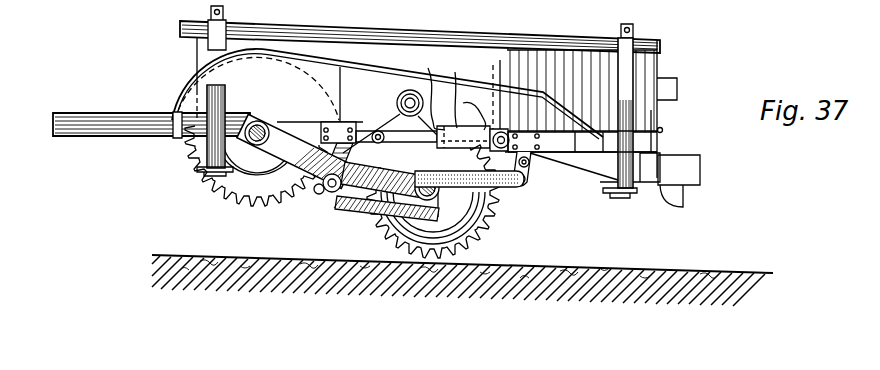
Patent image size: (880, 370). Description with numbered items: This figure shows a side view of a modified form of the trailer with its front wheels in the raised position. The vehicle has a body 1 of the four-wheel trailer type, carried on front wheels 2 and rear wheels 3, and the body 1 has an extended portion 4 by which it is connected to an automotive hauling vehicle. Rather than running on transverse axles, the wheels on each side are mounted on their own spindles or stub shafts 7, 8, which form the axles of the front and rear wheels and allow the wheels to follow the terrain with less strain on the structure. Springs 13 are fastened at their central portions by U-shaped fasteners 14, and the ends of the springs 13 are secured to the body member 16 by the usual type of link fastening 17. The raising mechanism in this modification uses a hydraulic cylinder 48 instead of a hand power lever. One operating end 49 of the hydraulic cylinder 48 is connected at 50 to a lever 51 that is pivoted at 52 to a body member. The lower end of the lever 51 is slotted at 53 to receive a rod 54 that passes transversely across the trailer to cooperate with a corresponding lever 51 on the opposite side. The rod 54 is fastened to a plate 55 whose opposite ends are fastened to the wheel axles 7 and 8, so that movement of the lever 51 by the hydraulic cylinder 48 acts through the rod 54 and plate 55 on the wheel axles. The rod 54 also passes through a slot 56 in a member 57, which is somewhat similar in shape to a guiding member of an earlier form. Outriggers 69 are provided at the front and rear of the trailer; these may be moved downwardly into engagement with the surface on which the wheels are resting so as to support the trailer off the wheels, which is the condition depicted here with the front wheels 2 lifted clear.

The body 1 is at (198, 62).
The front wheels 2 is at (190, 155).
The rear wheels 3 is at (500, 223).
The extended portion 4 is at (125, 118).
The spindle or stub shaft 7 is at (282, 124).
The spindle or stub shaft 8 is at (358, 216).
The spring 13 is at (528, 172).
The U-shaped fastener 14 is at (458, 138).
The body member 16 is at (303, 122).
The link fastening 17 is at (530, 178).
The hydraulic cylinder 48 is at (464, 92).
The operating end 49 is at (425, 92).
The connection 50 is at (318, 154).
The lever 51 is at (376, 114).
The pivot 52 is at (398, 100).
The slot 53 is at (329, 194).
The rod 54 is at (327, 207).
The plate 55 is at (276, 148).
The slot 56 is at (445, 225).
The member 57 is at (380, 223).
The outrigger 69 is at (207, 100).